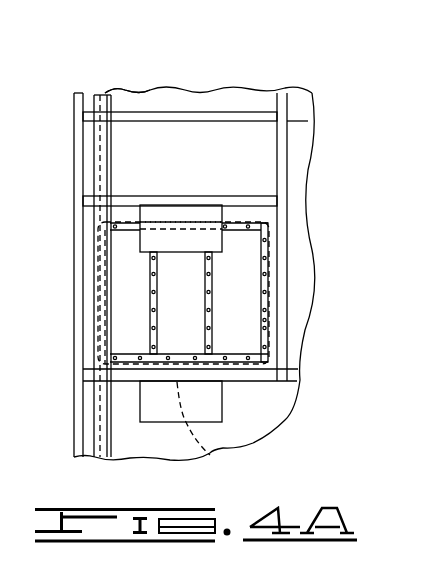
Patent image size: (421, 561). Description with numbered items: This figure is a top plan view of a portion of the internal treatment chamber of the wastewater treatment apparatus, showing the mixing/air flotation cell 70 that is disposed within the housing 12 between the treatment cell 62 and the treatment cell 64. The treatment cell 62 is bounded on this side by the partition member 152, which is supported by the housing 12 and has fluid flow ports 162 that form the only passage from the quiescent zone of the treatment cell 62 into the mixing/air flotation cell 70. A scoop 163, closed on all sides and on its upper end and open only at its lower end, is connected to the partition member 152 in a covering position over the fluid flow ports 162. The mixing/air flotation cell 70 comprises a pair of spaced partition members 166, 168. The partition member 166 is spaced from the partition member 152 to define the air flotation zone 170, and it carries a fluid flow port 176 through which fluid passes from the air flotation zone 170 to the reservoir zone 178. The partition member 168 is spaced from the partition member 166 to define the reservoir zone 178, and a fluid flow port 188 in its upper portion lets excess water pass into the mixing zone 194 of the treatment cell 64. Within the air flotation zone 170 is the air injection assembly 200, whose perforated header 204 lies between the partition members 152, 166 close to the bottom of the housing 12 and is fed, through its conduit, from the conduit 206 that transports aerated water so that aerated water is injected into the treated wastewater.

The housing 12 is at (75, 350).
The treatment cell 62 is at (120, 407).
The treatment cell 64 is at (81, 96).
The mixing/air flotation cell 70 is at (113, 311).
The partition member 152 is at (93, 373).
The fluid flow ports 162 is at (212, 455).
The scoop 163 is at (202, 408).
The partition member 166 is at (93, 203).
The partition member 168 is at (96, 116).
The air flotation zone 170 is at (127, 272).
The fluid flow port 176 is at (183, 206).
The reservoir zone 178 is at (125, 158).
The fluid flow port 188 is at (133, 112).
The mixing zone 194 is at (125, 95).
The air injection assembly 200 is at (270, 277).
The perforated header 204 is at (262, 320).
The conduit 206 is at (107, 437).